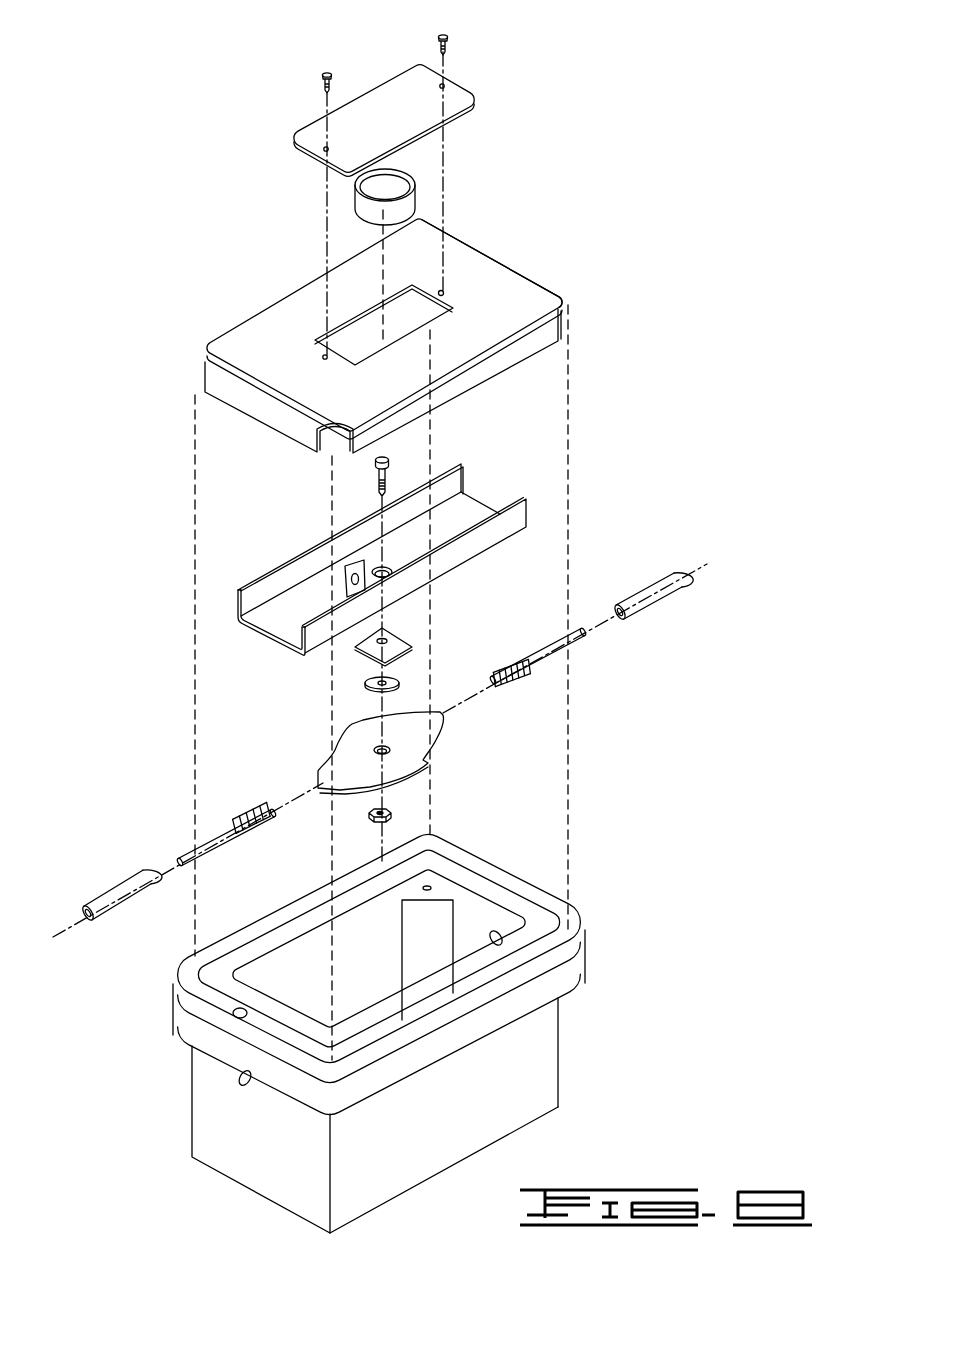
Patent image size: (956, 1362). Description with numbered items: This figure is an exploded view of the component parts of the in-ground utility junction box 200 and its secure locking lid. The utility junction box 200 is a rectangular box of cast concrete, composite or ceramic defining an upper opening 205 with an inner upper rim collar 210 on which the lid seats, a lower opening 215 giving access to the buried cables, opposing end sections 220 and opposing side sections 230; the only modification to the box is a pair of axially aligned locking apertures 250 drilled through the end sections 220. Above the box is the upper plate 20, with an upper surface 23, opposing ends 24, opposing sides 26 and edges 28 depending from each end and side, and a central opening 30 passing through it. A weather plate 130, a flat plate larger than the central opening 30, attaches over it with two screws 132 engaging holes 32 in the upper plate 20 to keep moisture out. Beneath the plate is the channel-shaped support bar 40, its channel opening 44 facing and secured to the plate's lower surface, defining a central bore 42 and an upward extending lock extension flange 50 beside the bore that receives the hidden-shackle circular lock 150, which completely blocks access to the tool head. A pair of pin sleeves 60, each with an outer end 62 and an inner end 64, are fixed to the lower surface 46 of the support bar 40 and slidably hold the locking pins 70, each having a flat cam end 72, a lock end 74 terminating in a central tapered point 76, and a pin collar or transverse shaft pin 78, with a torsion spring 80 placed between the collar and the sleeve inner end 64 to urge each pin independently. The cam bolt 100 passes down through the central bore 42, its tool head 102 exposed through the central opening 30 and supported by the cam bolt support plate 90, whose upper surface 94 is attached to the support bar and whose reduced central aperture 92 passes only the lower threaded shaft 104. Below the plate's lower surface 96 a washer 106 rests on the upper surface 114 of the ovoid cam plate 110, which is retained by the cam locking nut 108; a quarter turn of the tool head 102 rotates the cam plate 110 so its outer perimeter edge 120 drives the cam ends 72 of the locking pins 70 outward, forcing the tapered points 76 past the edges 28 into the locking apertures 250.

The upper plate 20 is at (381, 315).
The upper surface 23 is at (258, 330).
The opposing ends 24 is at (555, 290).
The opposing sides 26 is at (528, 327).
The edges 28 is at (223, 402).
The central opening 30 is at (360, 312).
The holes 32 is at (444, 292).
The support bar 40 is at (375, 571).
The central bore 42 is at (392, 566).
The channel opening 44 is at (257, 613).
The lower surface 46 is at (275, 646).
The lock extension flange 50 is at (346, 576).
The pin sleeves 60 is at (411, 729).
The outer end 62 is at (679, 597).
The inner end 64 is at (638, 619).
The locking pins 70 is at (556, 667).
The cam end 72 is at (494, 685).
The lock end 74 is at (584, 638).
The central tapered point 76 is at (200, 818).
The pin collar or transverse shaft pin 78 is at (266, 810).
The torsion spring 80 is at (236, 826).
The cam bolt support plate 90 is at (373, 638).
The central aperture 92 is at (386, 640).
The upper surface 94 is at (398, 641).
The lower surface 96 is at (410, 657).
The cam bolt 100 is at (356, 470).
The tool head 102 is at (390, 455).
The lower threaded shaft 104 is at (378, 492).
The washer 106 is at (366, 685).
The cam locking nut 108 is at (390, 815).
The cam plate 110 is at (374, 783).
The upper surface 114 is at (412, 742).
The outer perimeter edge 120 is at (345, 795).
The weather plate 130 is at (463, 88).
The screws 132 is at (322, 78).
The circular lock 150 is at (356, 200).
The utility junction box 200 is at (393, 1029).
The upper opening 205 is at (236, 1012).
The inner upper rim collar 210 is at (460, 896).
The lower opening 215 is at (540, 1113).
The opposing end sections 220 is at (235, 1163).
The opposing side sections 230 is at (415, 1163).
The locking apertures 250 is at (500, 945).